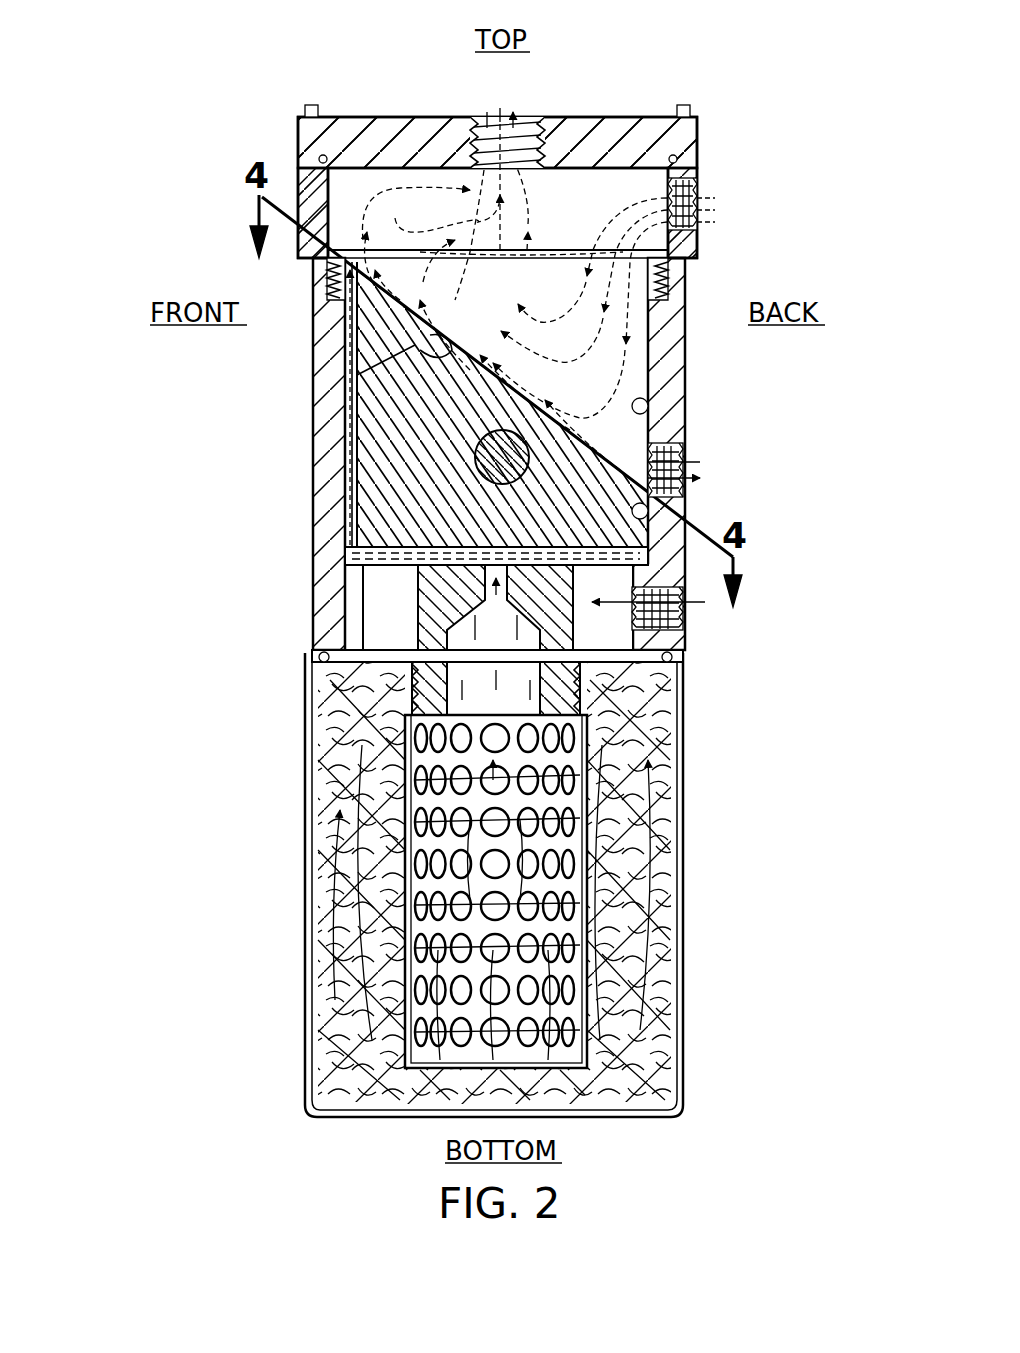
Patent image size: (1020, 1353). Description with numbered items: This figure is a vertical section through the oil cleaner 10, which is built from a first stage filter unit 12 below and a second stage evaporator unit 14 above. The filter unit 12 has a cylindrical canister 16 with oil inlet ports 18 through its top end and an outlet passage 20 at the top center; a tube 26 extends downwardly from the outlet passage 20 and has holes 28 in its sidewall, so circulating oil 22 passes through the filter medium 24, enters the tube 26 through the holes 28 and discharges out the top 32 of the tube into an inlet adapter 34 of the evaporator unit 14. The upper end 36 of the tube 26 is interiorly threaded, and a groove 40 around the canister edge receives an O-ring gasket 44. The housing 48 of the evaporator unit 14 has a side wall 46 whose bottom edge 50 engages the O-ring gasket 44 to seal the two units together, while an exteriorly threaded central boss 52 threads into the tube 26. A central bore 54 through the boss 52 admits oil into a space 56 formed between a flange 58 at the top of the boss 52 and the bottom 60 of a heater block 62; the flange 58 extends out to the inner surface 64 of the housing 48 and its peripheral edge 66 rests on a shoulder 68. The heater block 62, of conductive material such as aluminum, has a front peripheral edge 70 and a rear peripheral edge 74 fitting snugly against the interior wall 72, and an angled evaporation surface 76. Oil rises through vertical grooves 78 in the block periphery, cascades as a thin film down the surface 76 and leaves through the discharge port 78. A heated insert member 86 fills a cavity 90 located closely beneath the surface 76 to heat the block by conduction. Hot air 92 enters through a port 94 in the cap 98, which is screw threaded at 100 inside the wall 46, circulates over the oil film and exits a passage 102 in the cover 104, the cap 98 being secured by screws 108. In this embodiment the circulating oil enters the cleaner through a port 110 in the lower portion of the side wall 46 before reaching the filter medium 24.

The oil cleaner 10 is at (187, 105).
The first stage filter unit 12 is at (452, 882).
The second stage evaporator unit 14 is at (433, 479).
The cylindrical canister 16 is at (683, 862).
The oil inlet ports 18 is at (312, 698).
The outlet passage 20 is at (512, 677).
The circulating oil 22 is at (345, 530).
The filter medium 24 is at (312, 872).
The tube 26 is at (682, 898).
The holes 28 is at (415, 935).
The top of the tube 32 is at (313, 748).
The inlet adapter 34 is at (340, 622).
The upper end of the tube 36 is at (313, 775).
The groove 40 is at (686, 682).
The O-ring gasket 44 is at (322, 660).
The side wall 46 is at (662, 388).
The cylindrical housing 48 is at (694, 307).
The bottom edge 50 is at (505, 711).
The central boss 52 is at (345, 600).
The central bore 54 is at (330, 636).
The space 56 is at (345, 549).
The flange 58 is at (370, 562).
The bottom of the heater block 60 is at (572, 530).
The heater block 62 is at (425, 505).
The inner surface of the housing 64 is at (684, 492).
The peripheral edge of the flange 66 is at (650, 560).
The shoulder 68 is at (633, 585).
The front peripheral edge 70 is at (340, 445).
The interior wall of the housing 72 is at (665, 410).
The rear peripheral edge 74 is at (664, 520).
The angled evaporation surface 76 is at (352, 372).
The vertical grooves / oil discharge port 78 is at (345, 408).
The heated insert member 86 is at (528, 468).
The cavity 90 is at (490, 435).
The hot air 92 is at (330, 270).
The port 94 is at (690, 196).
The cap 98 is at (712, 133).
The screw threads 100 is at (325, 290).
The passage 102 is at (525, 125).
The cover 104 is at (383, 135).
The screws 108 is at (305, 105).
The port 110 is at (686, 612).